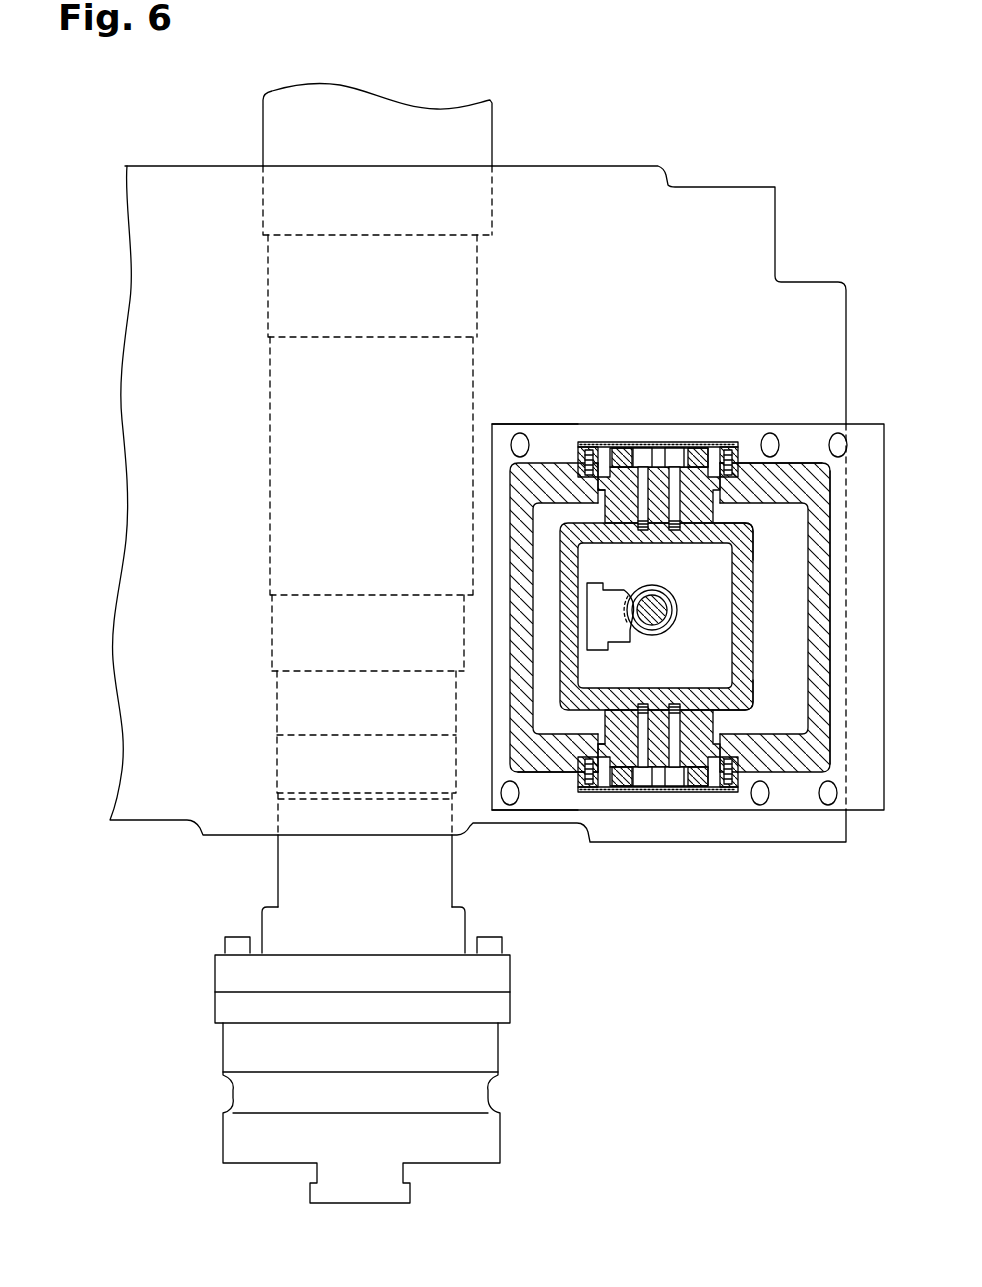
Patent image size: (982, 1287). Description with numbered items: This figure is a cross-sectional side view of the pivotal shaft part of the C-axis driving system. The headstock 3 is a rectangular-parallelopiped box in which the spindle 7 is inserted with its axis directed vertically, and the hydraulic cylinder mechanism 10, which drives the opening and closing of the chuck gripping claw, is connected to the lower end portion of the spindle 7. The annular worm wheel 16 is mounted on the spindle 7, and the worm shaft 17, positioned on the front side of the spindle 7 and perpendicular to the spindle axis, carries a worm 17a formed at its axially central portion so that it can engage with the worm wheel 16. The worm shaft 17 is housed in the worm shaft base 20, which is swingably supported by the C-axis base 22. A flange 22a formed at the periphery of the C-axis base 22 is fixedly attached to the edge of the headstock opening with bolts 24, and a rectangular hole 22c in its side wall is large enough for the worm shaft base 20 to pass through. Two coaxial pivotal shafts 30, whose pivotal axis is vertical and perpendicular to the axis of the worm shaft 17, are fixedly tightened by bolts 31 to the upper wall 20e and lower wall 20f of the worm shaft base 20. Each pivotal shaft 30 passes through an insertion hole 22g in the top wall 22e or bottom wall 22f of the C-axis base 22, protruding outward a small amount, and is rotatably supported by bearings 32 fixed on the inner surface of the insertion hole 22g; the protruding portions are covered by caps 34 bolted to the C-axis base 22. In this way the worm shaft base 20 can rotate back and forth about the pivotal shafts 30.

The headstock 3 is at (621, 164).
The spindle 7 is at (256, 152).
The hydraulic cylinder mechanism 10 is at (513, 980).
The worm wheel 16 is at (595, 588).
The worm shaft 17 is at (690, 599).
The worm 17a is at (686, 632).
The worm shaft base 20 is at (765, 586).
The upper wall 20e is at (738, 515).
The lower wall 20f is at (724, 713).
The C-axis base 22 is at (730, 420).
The flange 22a is at (553, 432).
The rectangular hole 22c is at (814, 577).
The top wall 22e is at (752, 462).
The bottom wall 22f is at (549, 771).
The insertion hole 22g is at (608, 498).
The bolts 24 is at (530, 435).
The pivotal shaft 30 is at (634, 434).
The bolts 31 is at (677, 452).
The bearings 32 is at (714, 446).
The caps 34 is at (624, 446).